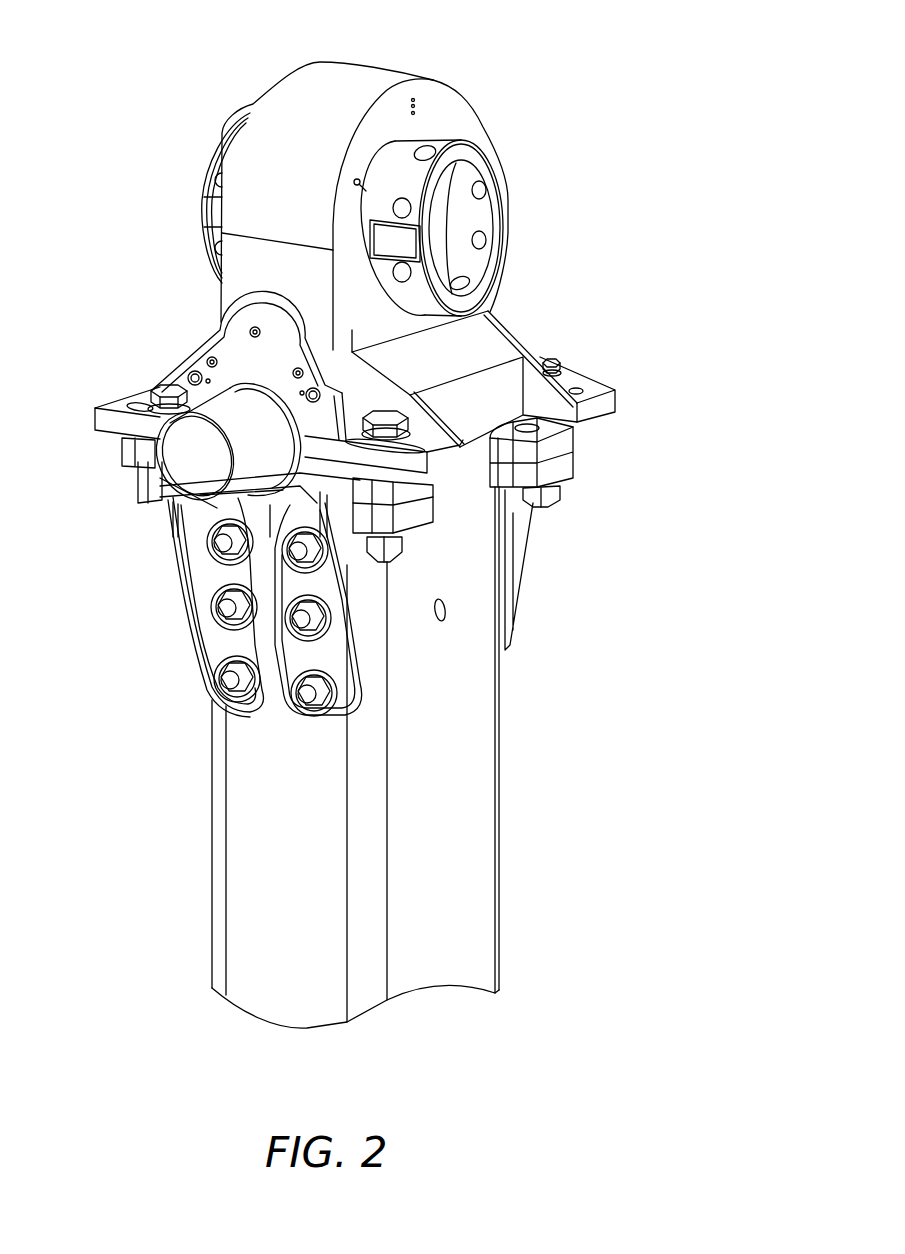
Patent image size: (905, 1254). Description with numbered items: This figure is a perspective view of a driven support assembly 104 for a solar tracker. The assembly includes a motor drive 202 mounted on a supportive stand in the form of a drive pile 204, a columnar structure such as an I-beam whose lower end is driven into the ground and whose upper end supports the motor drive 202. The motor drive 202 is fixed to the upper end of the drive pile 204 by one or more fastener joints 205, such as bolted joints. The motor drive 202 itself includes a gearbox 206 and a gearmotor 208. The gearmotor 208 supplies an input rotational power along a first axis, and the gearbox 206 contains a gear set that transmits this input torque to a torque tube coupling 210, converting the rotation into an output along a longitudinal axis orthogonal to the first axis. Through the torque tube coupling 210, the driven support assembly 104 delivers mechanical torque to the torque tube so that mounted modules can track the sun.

The driven support assembly 104 is at (642, 195).
The motor drive 202 is at (478, 103).
The drive pile 204 is at (452, 795).
The fastener joint 205 is at (172, 385).
The gearbox 206 is at (308, 127).
The gearmotor 208 is at (200, 463).
The torque tube coupling 210 is at (500, 170).